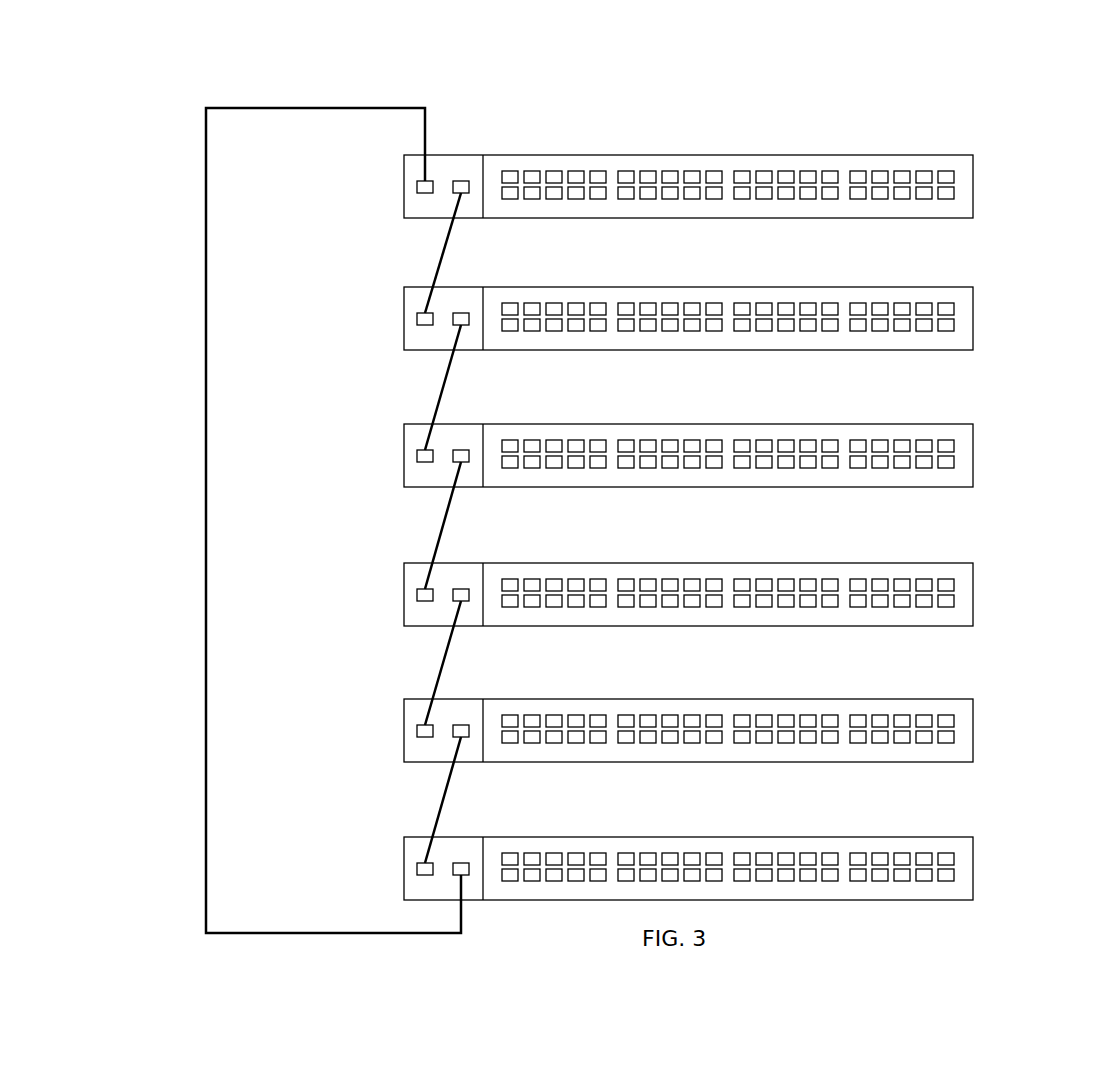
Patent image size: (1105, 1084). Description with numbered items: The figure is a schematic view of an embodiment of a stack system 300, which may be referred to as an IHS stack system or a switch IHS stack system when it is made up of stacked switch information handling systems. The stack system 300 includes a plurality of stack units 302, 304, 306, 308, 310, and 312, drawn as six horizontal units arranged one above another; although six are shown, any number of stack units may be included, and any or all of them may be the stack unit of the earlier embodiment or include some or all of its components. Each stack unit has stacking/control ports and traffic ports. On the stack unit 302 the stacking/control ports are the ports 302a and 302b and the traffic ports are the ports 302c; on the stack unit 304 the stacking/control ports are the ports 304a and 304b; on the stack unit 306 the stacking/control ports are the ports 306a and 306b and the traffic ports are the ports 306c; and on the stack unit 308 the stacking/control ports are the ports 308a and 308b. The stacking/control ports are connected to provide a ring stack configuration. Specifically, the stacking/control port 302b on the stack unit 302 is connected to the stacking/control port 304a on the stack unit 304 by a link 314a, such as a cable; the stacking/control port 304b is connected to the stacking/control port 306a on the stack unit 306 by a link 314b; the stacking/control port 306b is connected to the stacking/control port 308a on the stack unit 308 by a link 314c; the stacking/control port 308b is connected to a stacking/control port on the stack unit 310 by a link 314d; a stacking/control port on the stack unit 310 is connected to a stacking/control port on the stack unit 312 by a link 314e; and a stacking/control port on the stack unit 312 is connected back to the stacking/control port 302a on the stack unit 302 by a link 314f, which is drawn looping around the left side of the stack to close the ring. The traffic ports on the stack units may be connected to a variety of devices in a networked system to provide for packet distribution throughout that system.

The stack system 300 is at (164, 162).
The stack unit 302 is at (973, 155).
The stacking/control port 302a is at (430, 181).
The stacking/control port 302b is at (462, 181).
The traffic ports 302c is at (858, 171).
The stack unit 304 is at (973, 287).
The stacking/control port 304a is at (427, 313).
The stacking/control port 304b is at (460, 313).
The stack unit 306 is at (973, 424).
The stacking/control port 306a is at (427, 450).
The stacking/control port 306b is at (460, 450).
The traffic ports 306c is at (858, 440).
The stack unit 308 is at (973, 563).
The stacking/control port 308a is at (427, 589).
The stacking/control port 308b is at (460, 589).
The stack unit 310 is at (973, 699).
The stack unit 312 is at (973, 837).
The link 314a is at (442, 257).
The link 314b is at (442, 388).
The link 314c is at (442, 526).
The link 314d is at (442, 658).
The link 314e is at (442, 800).
The link 314f is at (206, 446).